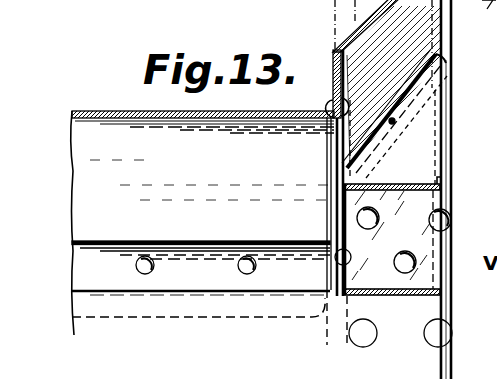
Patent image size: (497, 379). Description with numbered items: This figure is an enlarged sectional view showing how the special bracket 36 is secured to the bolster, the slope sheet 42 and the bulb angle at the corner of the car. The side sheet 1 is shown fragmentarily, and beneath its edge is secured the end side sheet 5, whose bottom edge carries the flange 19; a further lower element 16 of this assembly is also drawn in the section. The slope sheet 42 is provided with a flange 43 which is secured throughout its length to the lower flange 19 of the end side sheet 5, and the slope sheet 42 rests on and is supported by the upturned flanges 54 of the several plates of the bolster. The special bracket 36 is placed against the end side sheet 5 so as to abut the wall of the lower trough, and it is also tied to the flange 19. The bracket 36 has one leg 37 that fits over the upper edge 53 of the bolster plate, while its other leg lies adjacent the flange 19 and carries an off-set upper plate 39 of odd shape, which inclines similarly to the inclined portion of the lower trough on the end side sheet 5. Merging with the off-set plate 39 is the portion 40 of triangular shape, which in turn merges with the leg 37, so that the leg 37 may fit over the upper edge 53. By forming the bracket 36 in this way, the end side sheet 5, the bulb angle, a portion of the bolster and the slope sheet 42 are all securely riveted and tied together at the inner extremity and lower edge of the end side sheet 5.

The side sheet 1 is at (453, 133).
The end side sheet 5 is at (393, 0).
The lower flange of beam 16 is at (97, 307).
The flange 19 is at (333, 148).
The special bracket 36 is at (383, 173).
The leg 37 is at (413, 240).
The off-set upper plate 39 is at (403, 94).
The portion of triangular shape 40 is at (410, 130).
The slope sheet 42 is at (122, 159).
The flange 43 is at (330, 88).
The upper edge 53 is at (397, 297).
The upturned flanges 54 is at (207, 273).